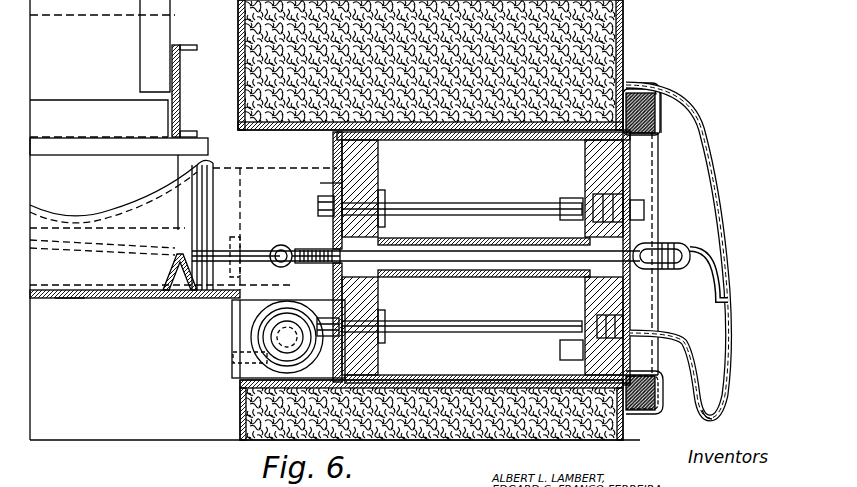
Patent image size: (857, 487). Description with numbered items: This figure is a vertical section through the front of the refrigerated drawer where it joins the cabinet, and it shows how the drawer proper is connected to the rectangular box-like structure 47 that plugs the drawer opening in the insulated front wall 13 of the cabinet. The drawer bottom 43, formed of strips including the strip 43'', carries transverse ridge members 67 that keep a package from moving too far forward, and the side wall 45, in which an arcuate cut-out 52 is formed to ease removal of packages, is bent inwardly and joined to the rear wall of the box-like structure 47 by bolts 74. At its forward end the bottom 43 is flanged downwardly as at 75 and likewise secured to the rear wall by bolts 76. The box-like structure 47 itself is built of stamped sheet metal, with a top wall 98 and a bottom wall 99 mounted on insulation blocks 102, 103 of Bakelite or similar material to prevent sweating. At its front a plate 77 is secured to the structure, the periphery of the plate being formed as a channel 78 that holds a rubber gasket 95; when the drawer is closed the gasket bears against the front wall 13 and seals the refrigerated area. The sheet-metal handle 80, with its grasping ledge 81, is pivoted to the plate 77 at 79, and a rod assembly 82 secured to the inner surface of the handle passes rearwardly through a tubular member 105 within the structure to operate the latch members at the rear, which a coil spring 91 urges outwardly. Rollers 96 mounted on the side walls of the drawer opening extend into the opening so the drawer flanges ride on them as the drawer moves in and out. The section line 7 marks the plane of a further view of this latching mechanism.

The section line 7— 7 is at (208, 120).
The front wall 13 is at (620, 50).
The bottom 43 is at (135, 307).
The bottom strip 43'' is at (68, 322).
The side wall 45 is at (273, 174).
The box-like structure 47 is at (423, 140).
The arcuate cut-out 52 is at (133, 192).
The transverse ridge member 67 is at (163, 270).
The bolt 74 is at (318, 205).
The downward flange 75 is at (380, 303).
The bolt 76 is at (382, 350).
The front plate 77 is at (630, 178).
The channel 78 is at (630, 418).
The pivot 79 is at (657, 100).
The handle 80 is at (725, 221).
The grasping ledge 81 is at (727, 402).
The rod assembly 82 is at (478, 250).
The coil spring 91 is at (334, 185).
The rubber gasket 95 is at (668, 85).
The roller 96 is at (257, 335).
The top wall 98 is at (483, 140).
The bottom wall 99 is at (487, 363).
The insulation block 102 is at (592, 293).
The insulation block 103 is at (378, 289).
The tubular member 105 is at (483, 277).